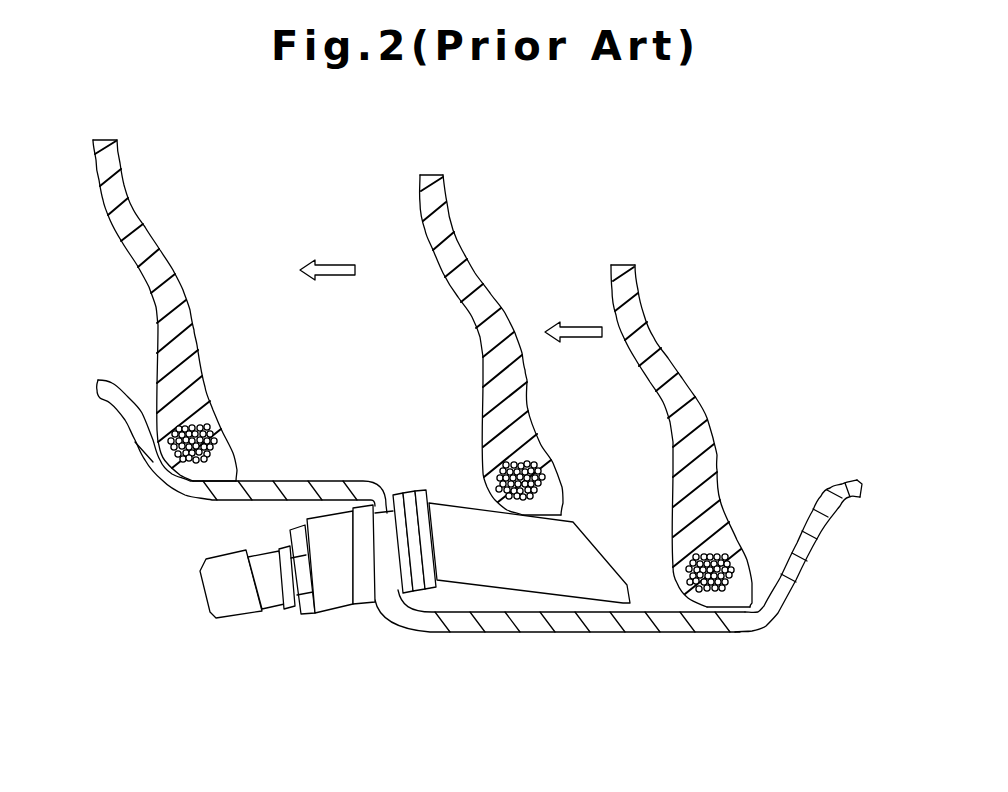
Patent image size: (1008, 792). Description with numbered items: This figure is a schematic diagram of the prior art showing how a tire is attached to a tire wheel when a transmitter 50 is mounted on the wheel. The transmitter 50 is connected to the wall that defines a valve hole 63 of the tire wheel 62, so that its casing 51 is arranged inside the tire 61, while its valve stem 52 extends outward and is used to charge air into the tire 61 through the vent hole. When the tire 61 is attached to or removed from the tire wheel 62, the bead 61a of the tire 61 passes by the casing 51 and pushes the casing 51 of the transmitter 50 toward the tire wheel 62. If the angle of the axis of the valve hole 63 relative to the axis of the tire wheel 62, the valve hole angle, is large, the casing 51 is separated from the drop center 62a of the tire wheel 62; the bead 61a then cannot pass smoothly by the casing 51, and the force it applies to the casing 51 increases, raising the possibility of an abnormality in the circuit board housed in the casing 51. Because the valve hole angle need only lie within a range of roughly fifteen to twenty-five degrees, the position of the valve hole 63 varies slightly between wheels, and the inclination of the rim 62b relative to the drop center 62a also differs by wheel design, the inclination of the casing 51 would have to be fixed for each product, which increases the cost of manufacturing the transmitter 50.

The transmitter 50 is at (415, 529).
The casing 51 is at (583, 543).
The valve stem 52 is at (268, 595).
The tire 61 is at (160, 252).
The bead 61a is at (203, 400).
The tire wheel 62 is at (479, 531).
The drop center 62a is at (533, 622).
The rim 62b is at (380, 505).
The valve hole 63 is at (383, 575).